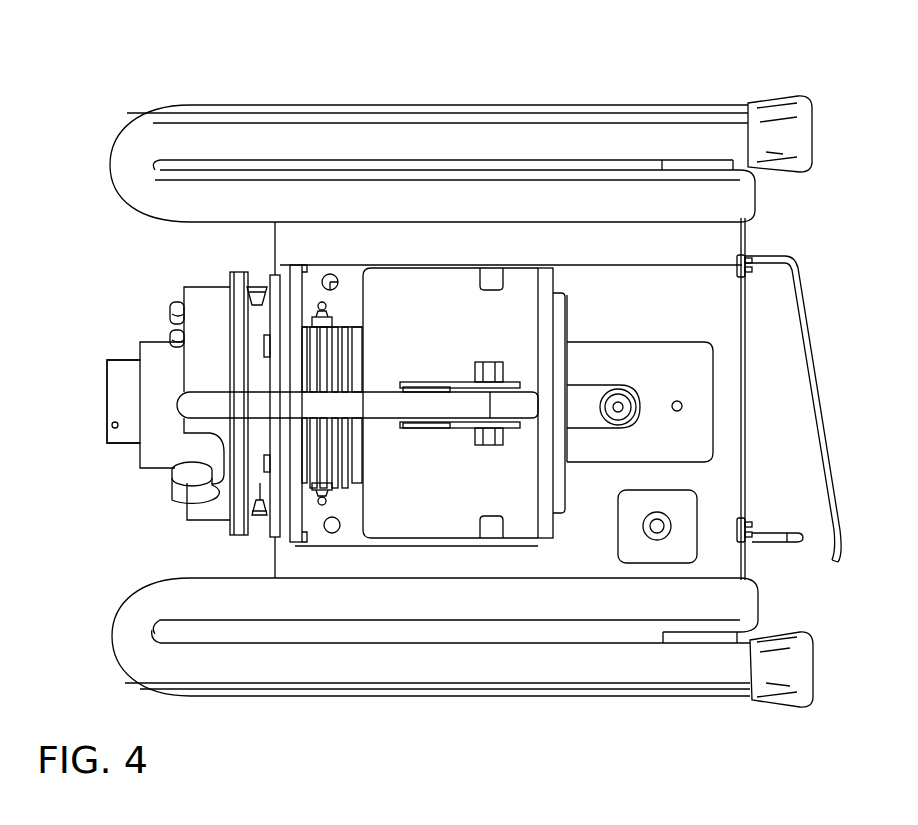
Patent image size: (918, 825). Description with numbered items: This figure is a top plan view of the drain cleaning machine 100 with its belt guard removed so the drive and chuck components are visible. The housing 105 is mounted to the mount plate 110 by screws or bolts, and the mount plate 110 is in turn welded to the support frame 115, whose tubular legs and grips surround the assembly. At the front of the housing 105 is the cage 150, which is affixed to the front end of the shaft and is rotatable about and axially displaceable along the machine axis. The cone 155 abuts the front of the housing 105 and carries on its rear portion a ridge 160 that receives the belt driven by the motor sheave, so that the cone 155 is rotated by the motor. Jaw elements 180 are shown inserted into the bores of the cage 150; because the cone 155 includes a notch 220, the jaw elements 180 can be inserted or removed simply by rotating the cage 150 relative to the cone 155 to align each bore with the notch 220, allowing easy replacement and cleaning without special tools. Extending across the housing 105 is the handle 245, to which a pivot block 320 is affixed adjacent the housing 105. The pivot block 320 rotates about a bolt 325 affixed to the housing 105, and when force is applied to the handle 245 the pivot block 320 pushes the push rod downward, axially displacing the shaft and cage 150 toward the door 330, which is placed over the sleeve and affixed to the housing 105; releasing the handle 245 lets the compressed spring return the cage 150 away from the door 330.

The drain cleaning machine 100 is at (604, 76).
The housing 105 is at (455, 283).
The mount plate 110 is at (530, 550).
The support frame 115 is at (460, 680).
The cage 150 is at (114, 378).
The cone 155 is at (210, 505).
The ridge 160 is at (257, 516).
The jaw element 180 is at (176, 320).
The notch 220 is at (200, 495).
The handle 245 is at (360, 405).
The pivot block 320 is at (498, 422).
The bolt 325 is at (488, 362).
The door 330 is at (640, 345).